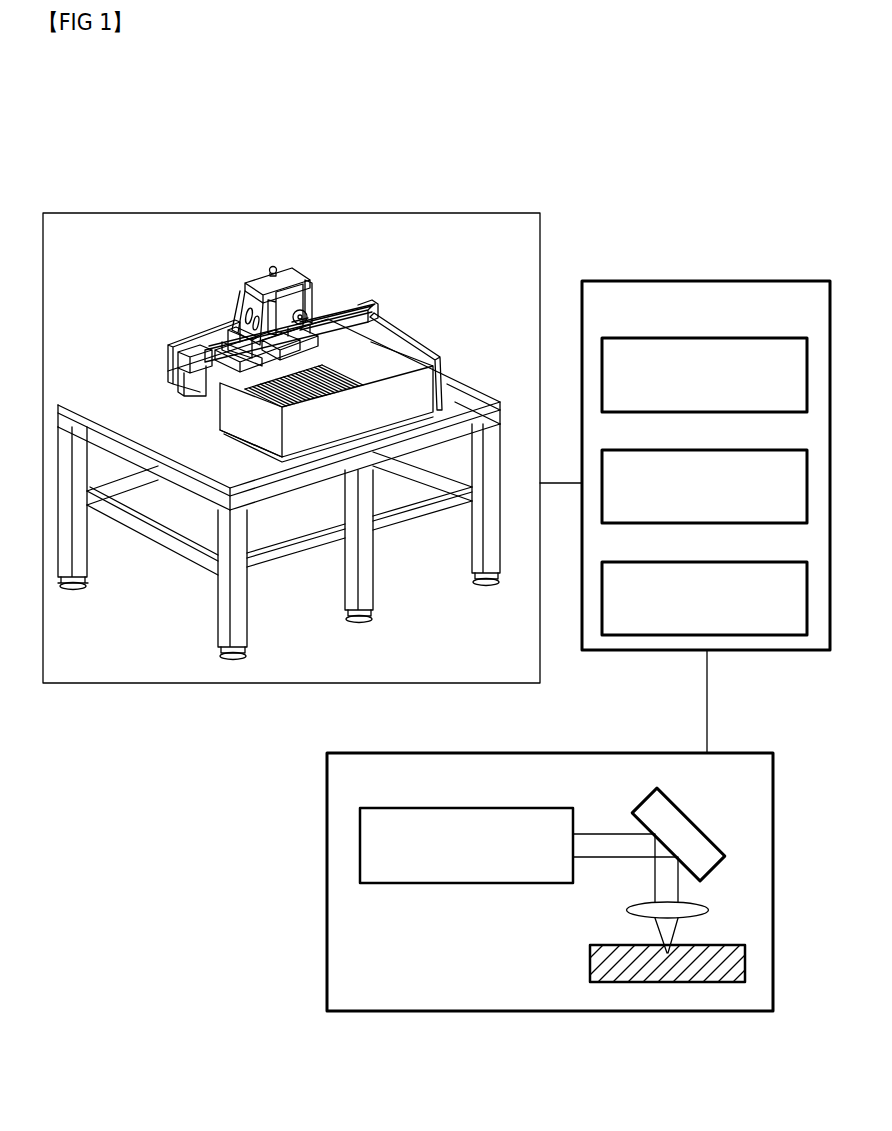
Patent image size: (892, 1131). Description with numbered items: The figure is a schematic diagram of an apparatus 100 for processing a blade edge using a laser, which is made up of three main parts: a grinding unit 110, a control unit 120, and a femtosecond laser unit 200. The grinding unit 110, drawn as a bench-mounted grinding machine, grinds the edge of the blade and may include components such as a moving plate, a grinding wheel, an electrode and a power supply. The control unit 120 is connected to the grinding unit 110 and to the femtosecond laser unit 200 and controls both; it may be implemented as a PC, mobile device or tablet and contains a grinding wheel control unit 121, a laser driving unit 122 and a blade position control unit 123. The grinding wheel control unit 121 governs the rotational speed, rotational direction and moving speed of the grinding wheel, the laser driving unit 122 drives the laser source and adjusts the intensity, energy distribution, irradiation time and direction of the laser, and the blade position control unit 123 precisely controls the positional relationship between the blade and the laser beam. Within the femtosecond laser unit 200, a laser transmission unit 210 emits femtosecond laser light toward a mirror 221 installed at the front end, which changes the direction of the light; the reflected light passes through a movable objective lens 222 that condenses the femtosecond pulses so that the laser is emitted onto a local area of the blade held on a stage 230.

The apparatus for processing a blade edge using a laser 100 is at (662, 74).
The grinding unit 110 is at (312, 212).
The control unit 120 is at (706, 281).
The grinding wheel control unit 121 is at (763, 338).
The laser driving unit 122 is at (752, 450).
The blade position control unit 123 is at (752, 562).
The femtosecond laser unit 200 is at (327, 882).
The laser transmission unit 210 is at (468, 884).
The mirror 221 is at (692, 822).
The movable objective lens 222 is at (708, 910).
The stage 230 is at (590, 962).